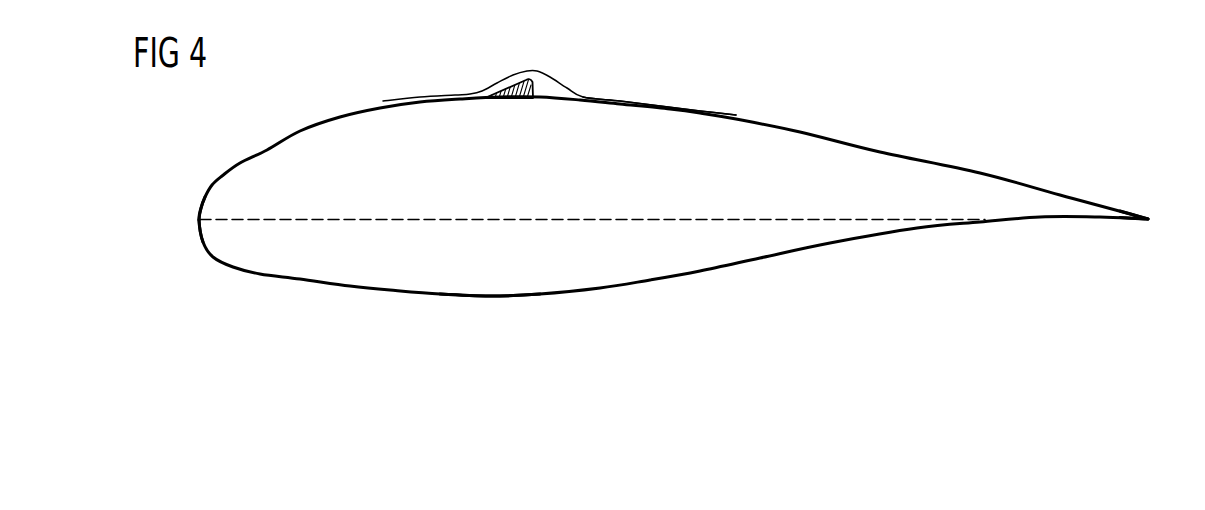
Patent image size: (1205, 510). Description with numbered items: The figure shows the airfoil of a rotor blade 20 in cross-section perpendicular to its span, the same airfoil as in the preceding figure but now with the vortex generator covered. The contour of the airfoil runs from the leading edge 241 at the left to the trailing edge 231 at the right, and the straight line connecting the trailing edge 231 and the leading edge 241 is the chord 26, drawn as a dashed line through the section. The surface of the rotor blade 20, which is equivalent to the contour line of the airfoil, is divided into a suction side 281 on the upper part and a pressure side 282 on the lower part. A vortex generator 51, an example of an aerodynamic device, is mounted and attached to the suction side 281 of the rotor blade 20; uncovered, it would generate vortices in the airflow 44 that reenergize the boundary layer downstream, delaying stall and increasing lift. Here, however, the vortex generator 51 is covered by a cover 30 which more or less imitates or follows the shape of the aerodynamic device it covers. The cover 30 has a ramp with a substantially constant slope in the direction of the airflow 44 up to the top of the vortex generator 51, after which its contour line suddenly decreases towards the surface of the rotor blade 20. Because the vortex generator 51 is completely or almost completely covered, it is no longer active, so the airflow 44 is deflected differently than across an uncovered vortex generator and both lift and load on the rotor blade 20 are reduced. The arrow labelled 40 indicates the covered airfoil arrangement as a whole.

The rotor blade 20 is at (387, 280).
The chord 26 is at (765, 218).
The cover 30 is at (528, 93).
The rotor blade assembly 40 is at (196, 142).
The airflow 44 is at (432, 97).
The vortex generator 51 is at (504, 99).
The trailing edge 231 is at (1149, 218).
The leading edge 241 is at (199, 220).
The suction side 281 is at (641, 104).
The pressure side 282 is at (497, 297).